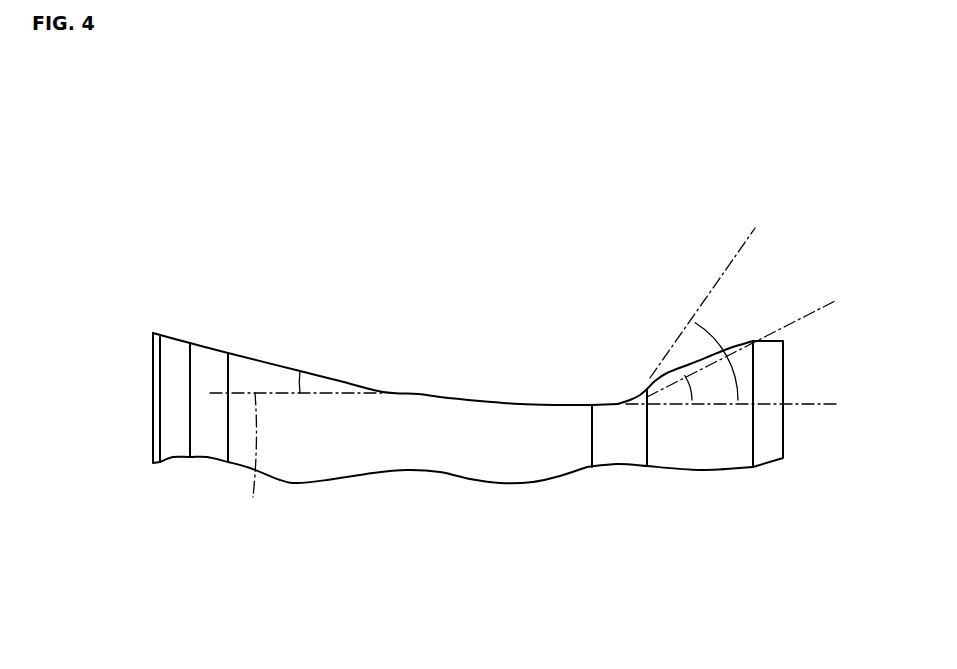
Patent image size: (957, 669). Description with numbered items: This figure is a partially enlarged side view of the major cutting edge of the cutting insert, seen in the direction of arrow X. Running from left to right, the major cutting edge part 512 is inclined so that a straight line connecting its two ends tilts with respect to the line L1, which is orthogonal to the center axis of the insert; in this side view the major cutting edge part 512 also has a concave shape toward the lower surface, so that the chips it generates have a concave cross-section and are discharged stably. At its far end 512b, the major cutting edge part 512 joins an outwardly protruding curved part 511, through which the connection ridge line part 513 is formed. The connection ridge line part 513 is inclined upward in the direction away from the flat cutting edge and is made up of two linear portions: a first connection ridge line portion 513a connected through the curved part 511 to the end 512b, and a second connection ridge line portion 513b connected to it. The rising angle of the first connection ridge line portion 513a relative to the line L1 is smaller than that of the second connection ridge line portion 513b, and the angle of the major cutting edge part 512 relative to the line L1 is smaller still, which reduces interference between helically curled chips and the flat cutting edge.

The curved part 511 is at (616, 404).
The major cutting edge part 512 is at (418, 394).
The other end of the major cutting edge part 512b is at (592, 402).
The connection ridge line part 513 is at (702, 197).
The first connection ridge line portion 513a is at (619, 402).
The second connection ridge line portion 513b is at (647, 389).
The line orthogonal to the center axis of the insert L1 is at (863, 427).